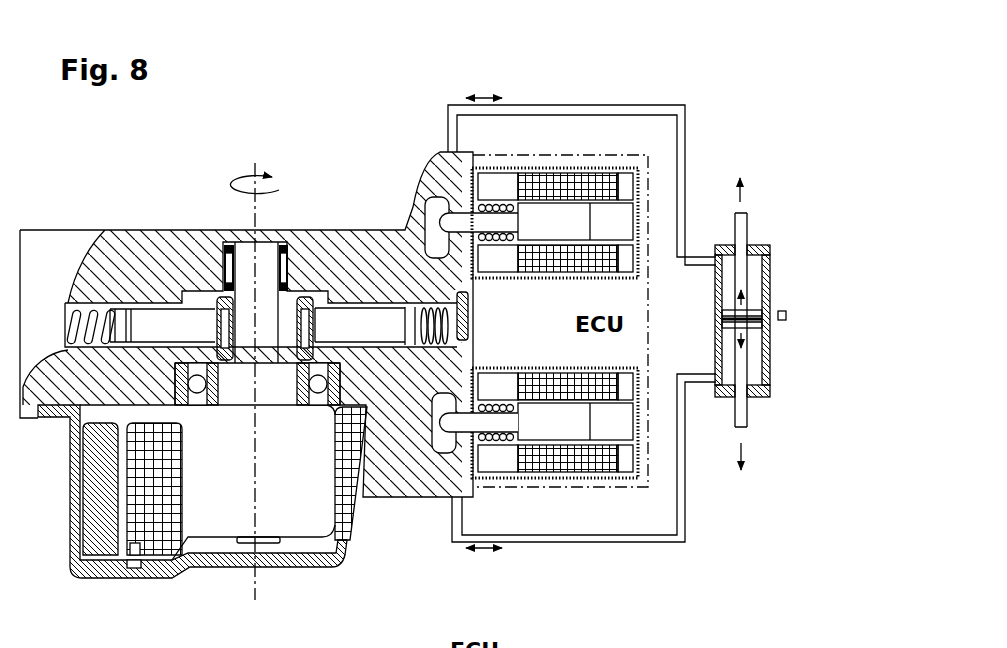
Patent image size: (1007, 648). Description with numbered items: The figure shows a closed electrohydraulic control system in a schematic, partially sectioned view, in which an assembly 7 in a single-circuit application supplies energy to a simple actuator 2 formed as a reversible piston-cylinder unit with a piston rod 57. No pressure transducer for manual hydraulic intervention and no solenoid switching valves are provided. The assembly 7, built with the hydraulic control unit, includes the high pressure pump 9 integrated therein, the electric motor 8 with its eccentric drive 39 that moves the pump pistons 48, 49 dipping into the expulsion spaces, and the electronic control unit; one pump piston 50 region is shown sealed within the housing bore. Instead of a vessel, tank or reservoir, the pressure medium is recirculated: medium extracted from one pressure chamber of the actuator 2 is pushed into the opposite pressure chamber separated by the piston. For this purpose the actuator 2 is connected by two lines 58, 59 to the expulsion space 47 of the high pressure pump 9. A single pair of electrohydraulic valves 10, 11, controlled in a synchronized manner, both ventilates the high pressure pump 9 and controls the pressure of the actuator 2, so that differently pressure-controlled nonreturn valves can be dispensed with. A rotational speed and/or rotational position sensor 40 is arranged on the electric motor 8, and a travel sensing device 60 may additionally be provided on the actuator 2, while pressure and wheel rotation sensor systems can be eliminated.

The actuator 2 is at (759, 245).
The assembly 7 is at (85, 228).
The electric motor 8 is at (202, 523).
The high pressure pump 9 is at (319, 292).
The valve 10 is at (642, 208).
The valve 11 is at (642, 433).
The eccentric drive 39 is at (285, 312).
The rotational speed and/or rotational position sensor 40 is at (134, 570).
The expulsion space 47 is at (455, 362).
The pump piston 48 is at (78, 348).
The pump piston 49 is at (378, 343).
The piston 50 is at (157, 318).
The piston rod 57 is at (747, 412).
The line 58 is at (598, 105).
The line 59 is at (602, 544).
The travel sensing device 60 is at (782, 322).